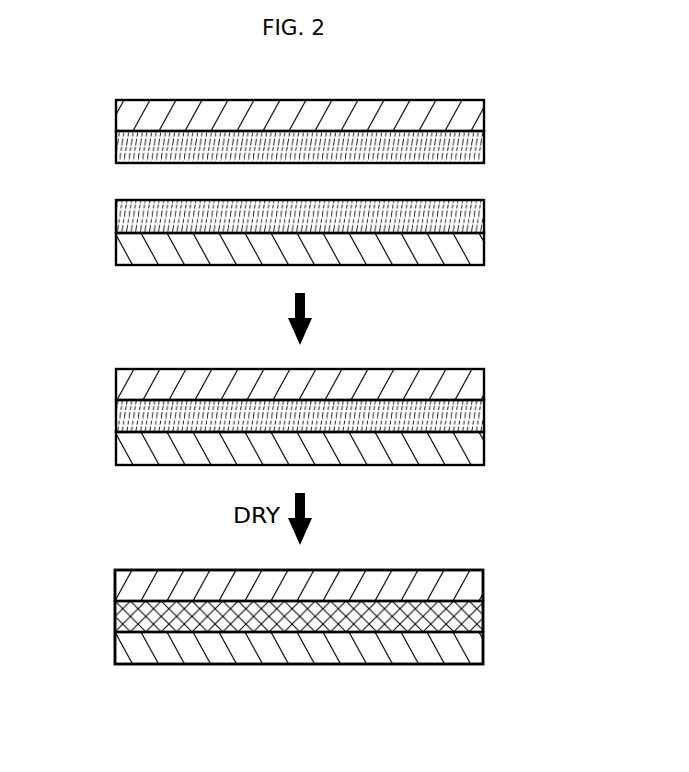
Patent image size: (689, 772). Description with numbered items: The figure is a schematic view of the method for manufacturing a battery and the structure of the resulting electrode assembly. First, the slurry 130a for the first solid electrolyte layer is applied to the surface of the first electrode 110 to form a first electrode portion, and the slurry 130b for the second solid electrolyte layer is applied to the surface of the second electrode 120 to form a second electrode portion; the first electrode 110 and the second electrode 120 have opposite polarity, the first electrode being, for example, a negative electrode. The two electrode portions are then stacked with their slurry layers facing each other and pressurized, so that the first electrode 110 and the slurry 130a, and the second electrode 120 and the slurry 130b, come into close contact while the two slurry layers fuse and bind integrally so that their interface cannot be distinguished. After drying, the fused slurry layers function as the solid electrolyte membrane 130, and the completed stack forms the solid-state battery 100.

The solid-state battery 100 is at (483, 550).
The first electrode 110 is at (120, 121).
The second electrode 120 is at (120, 248).
The solid electrolyte membrane 130 is at (476, 613).
The slurry for the first solid electrolyte layer 130a is at (120, 150).
The slurry for the second solid electrolyte layer 130b is at (120, 221).